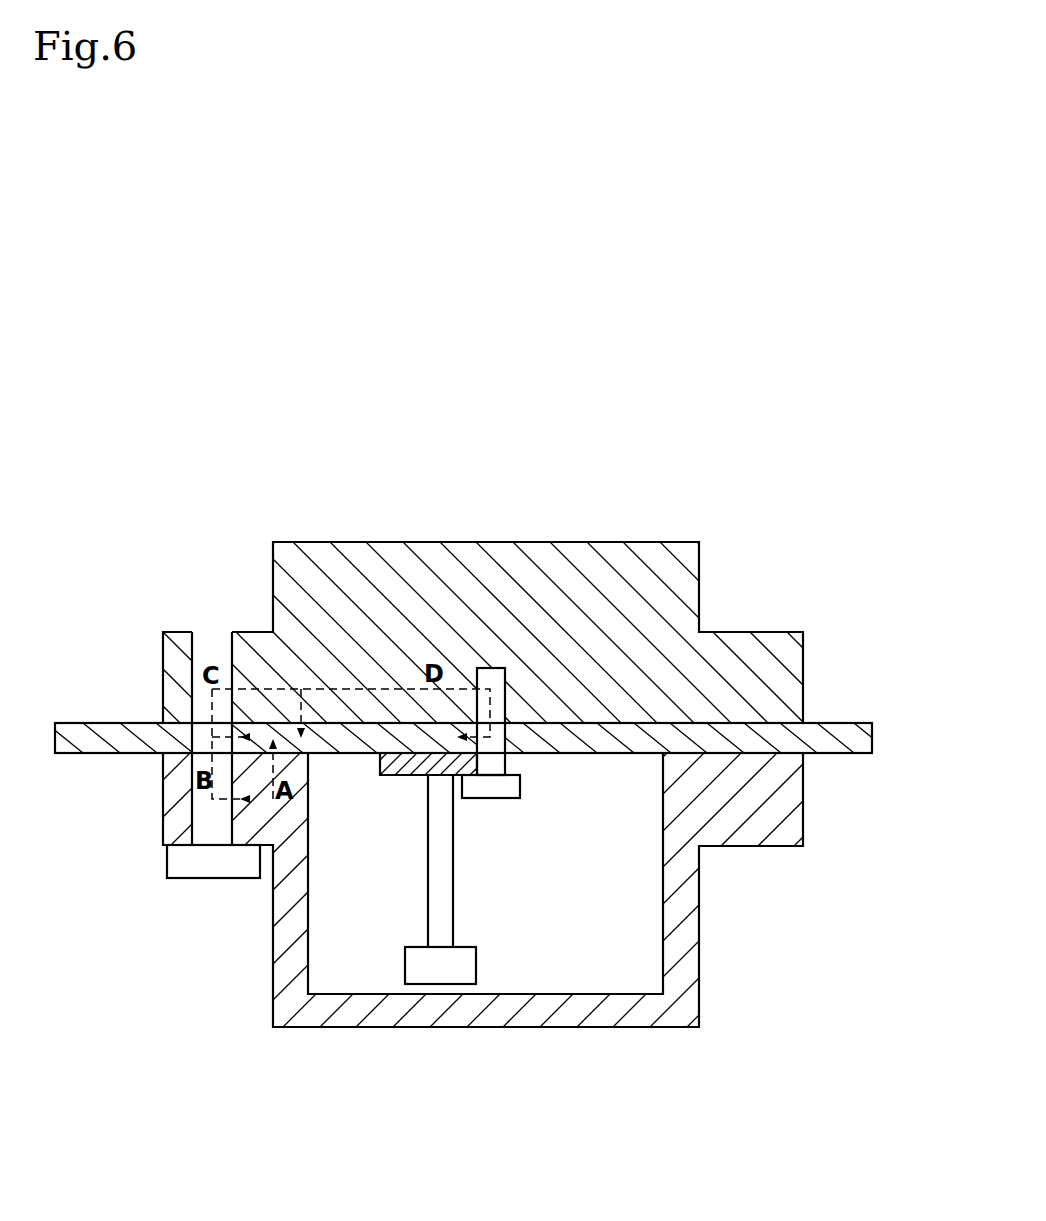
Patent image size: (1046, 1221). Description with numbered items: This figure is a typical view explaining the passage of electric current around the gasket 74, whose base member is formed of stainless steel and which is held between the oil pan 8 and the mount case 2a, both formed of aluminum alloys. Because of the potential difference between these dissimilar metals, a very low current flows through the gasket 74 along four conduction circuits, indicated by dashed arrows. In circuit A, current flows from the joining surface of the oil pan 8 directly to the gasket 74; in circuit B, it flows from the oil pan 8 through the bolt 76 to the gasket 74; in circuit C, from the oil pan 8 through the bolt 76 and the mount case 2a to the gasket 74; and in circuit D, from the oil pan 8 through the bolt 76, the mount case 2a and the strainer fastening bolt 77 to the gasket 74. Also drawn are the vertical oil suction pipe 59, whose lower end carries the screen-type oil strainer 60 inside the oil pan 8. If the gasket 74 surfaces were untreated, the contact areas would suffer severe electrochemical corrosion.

The mount case 2a is at (670, 602).
The oil pan 8 is at (675, 945).
The gasket 74 is at (105, 755).
The bolt 76 is at (207, 810).
The strainer fastening bolt 77 is at (492, 763).
The oil suction pipe 59 is at (440, 883).
The oil strainer 60 is at (462, 967).